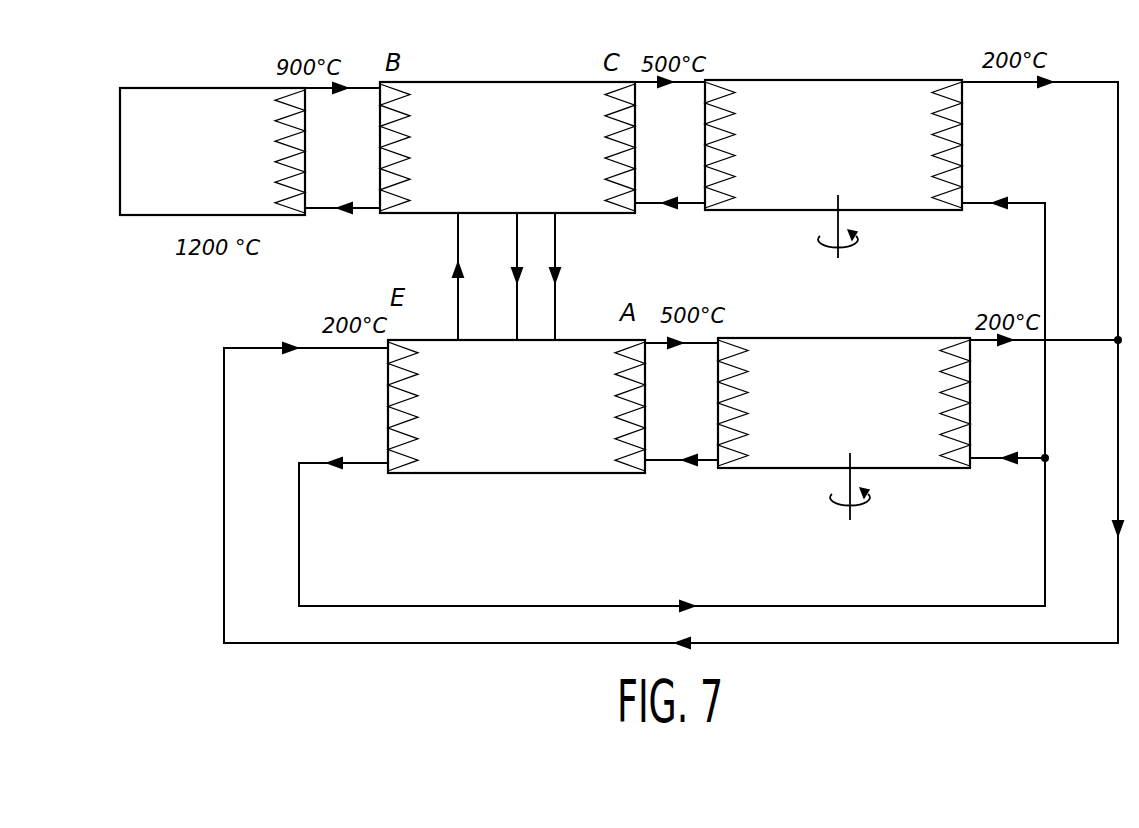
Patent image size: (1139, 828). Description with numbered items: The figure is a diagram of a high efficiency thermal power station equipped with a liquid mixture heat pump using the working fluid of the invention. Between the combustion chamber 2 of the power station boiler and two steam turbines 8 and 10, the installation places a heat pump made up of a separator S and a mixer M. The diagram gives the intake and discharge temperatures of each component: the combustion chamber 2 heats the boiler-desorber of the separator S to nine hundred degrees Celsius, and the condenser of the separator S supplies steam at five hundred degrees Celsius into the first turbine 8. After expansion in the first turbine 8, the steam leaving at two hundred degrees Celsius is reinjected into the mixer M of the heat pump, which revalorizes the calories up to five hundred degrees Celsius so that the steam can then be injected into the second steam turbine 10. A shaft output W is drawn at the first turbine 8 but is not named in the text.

The combustion chamber 2 is at (120, 164).
The separator S is at (514, 78).
The first steam turbine 8 is at (868, 74).
The work output shaft W is at (838, 243).
The mixer M is at (530, 474).
The second steam turbine 10 is at (872, 338).